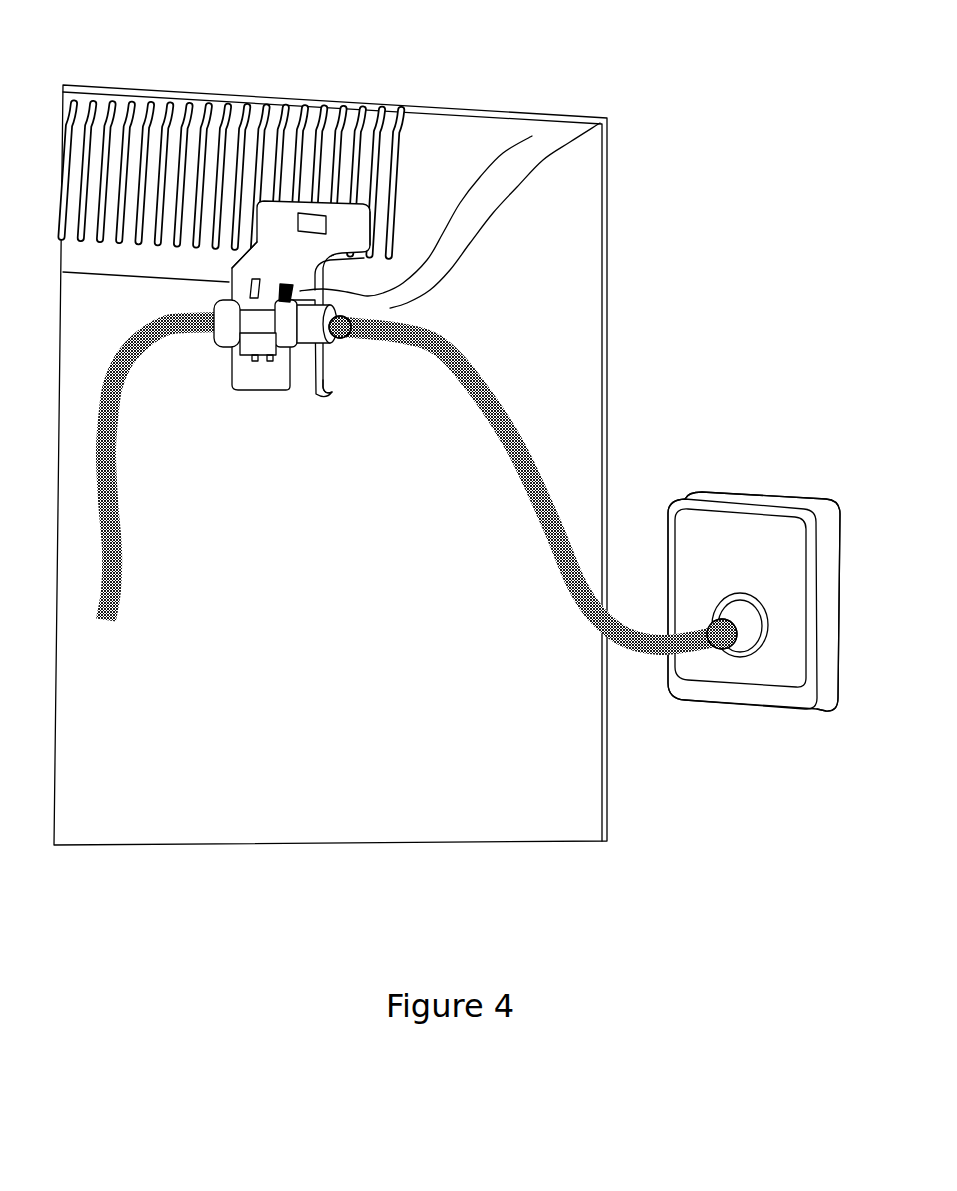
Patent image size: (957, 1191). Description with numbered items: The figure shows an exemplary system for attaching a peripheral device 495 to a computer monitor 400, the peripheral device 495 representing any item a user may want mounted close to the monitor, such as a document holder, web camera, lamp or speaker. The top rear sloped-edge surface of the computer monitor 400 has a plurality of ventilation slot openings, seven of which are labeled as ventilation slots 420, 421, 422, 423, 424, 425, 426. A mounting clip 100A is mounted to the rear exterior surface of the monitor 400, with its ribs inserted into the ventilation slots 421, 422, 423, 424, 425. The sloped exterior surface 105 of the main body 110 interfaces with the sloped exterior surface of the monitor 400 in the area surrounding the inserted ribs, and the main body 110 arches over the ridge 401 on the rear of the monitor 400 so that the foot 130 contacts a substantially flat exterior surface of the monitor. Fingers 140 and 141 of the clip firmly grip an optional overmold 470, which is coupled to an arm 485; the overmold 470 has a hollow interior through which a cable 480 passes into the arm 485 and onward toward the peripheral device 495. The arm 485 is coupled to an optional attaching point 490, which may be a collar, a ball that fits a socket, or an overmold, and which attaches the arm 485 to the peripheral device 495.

The mounting clip 100A is at (294, 299).
The sloped exterior surface 105 is at (374, 226).
The main body 110 is at (243, 264).
The foot 130 is at (336, 392).
The finger 140 is at (270, 356).
The finger 141 is at (390, 305).
The computer monitor 400 is at (347, 781).
The ridge 401 is at (450, 220).
The ventilation slot 420 is at (291, 101).
The ventilation slot 421 is at (312, 104).
The ventilation slot 422 is at (327, 101).
The ventilation slot 423 is at (350, 101).
The ventilation slot 424 is at (375, 102).
The ventilation slot 425 is at (387, 103).
The ventilation slot 426 is at (408, 105).
The overmold 470 is at (230, 348).
The cable 480 is at (122, 586).
The arm 485 is at (553, 490).
The attaching point 490 is at (755, 605).
The peripheral device 495 is at (787, 490).